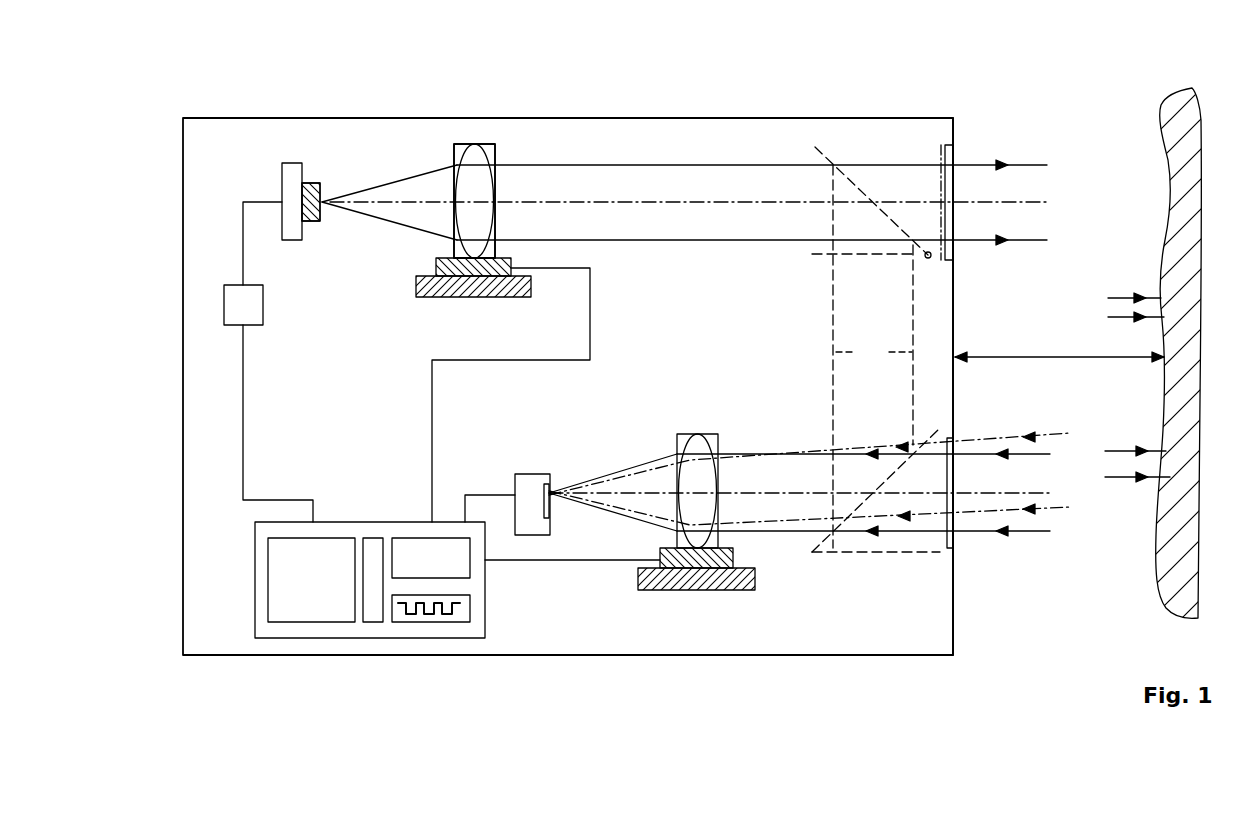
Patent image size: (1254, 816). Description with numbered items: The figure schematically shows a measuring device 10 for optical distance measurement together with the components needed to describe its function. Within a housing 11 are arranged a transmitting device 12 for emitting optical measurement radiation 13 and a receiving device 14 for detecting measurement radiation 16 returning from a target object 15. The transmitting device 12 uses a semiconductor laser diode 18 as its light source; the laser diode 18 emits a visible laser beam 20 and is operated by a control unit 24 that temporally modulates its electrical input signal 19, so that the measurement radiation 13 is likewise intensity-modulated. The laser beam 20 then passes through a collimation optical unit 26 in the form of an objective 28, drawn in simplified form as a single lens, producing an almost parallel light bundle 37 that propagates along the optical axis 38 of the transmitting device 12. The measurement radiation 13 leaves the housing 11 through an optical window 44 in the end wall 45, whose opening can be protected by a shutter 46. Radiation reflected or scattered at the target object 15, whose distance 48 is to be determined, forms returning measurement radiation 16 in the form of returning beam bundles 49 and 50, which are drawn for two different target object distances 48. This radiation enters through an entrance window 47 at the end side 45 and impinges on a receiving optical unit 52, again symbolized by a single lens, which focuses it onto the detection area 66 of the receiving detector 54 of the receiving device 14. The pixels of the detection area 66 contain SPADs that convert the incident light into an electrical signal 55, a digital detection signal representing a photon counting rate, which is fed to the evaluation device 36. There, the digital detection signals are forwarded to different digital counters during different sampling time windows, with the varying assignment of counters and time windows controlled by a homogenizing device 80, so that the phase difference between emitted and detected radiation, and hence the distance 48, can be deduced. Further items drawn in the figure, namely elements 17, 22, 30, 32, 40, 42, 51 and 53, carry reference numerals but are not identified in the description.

The measuring device 10 is at (252, 73).
The housing 11 is at (772, 132).
The transmitting device 12 is at (367, 234).
The optical measurement radiation 13 is at (908, 182).
The receiving device 14 is at (617, 460).
The target object 15 is at (1150, 233).
The returning measurement radiation 16 is at (1118, 450).
The light source 17 is at (318, 185).
The semiconductor laser diode 18 is at (332, 139).
The electrical input signal 19 is at (248, 193).
The laser beam 20 is at (332, 224).
The collimated beam 22 is at (425, 185).
The control unit 24 is at (238, 305).
The collimation optical unit 26 is at (487, 150).
The objective 28 is at (503, 158).
The lens element 30 is at (517, 158).
The lens mount / actuator 32 is at (425, 268).
The evaluation device 36 is at (373, 630).
The almost parallel light bundle 37 is at (710, 220).
The optical axis 38 is at (712, 200).
The deflection element / beam splitter 40 is at (852, 180).
The reference path 42 is at (874, 352).
The optical window 44 is at (955, 150).
The end wall 45 is at (955, 296).
The shutter 46 is at (932, 258).
The entrance window 47 is at (952, 541).
The distance 48 is at (1058, 365).
The returning beam bundle 49 is at (1033, 520).
The returning beam bundle 50 is at (1035, 492).
The receiving optical axis 51 is at (771, 490).
The receiving optical unit 52 is at (713, 437).
The receiving lens mount 53 is at (756, 558).
The receiving detector 54 is at (535, 480).
The electrical signal 55 is at (490, 494).
The detection area 66 is at (537, 530).
The homogenizing device 80 is at (305, 607).